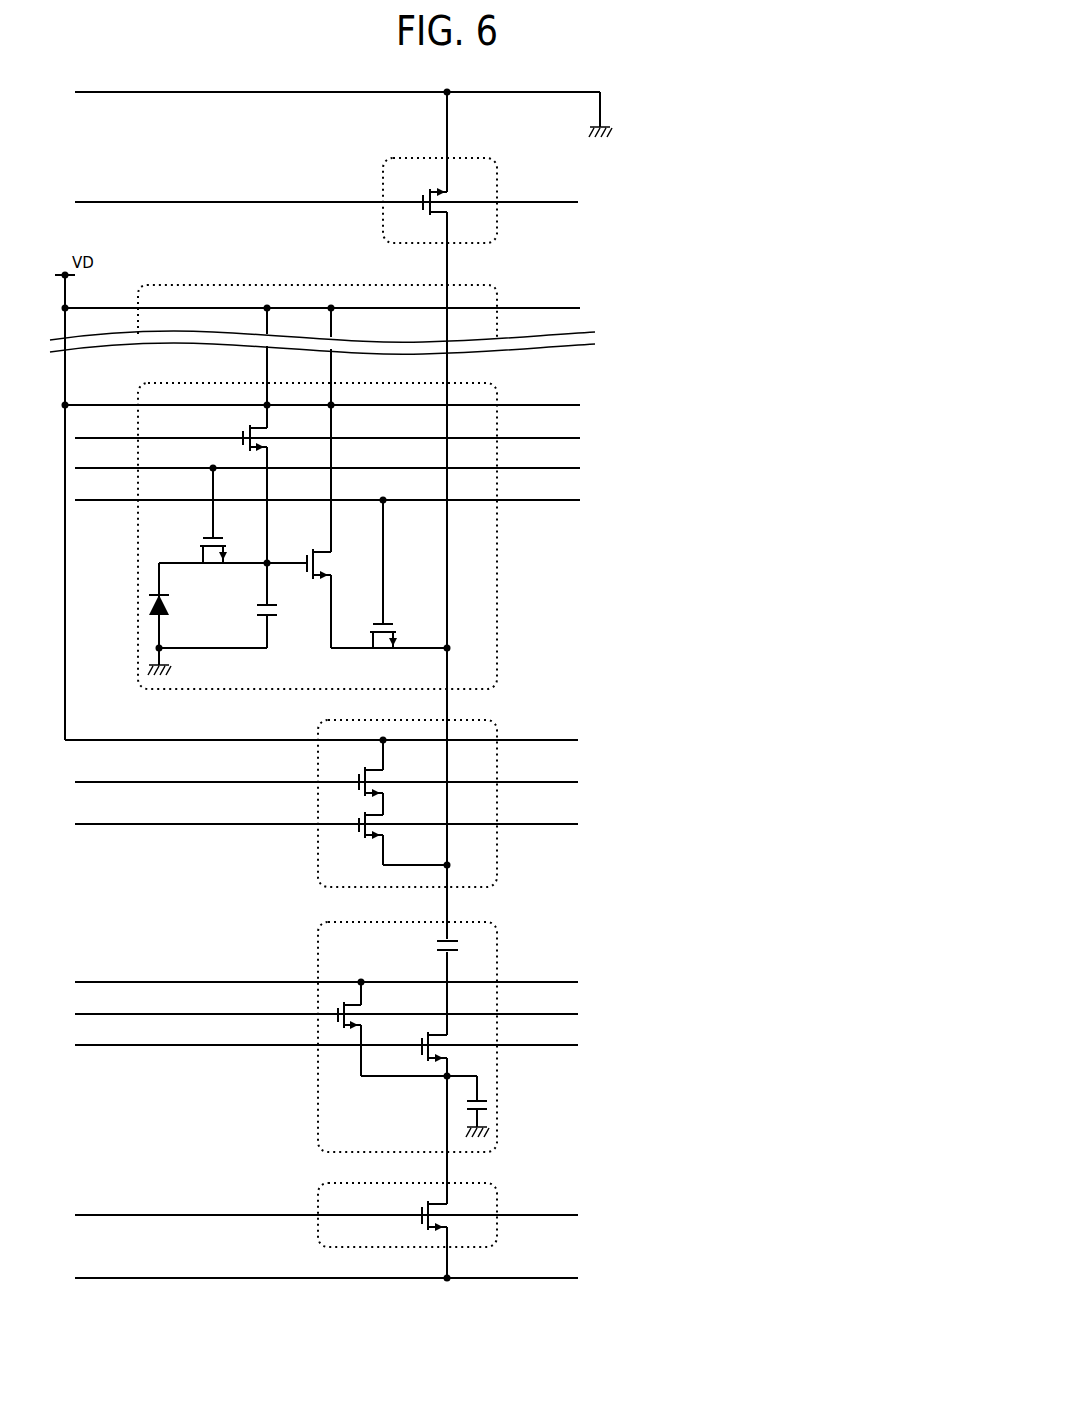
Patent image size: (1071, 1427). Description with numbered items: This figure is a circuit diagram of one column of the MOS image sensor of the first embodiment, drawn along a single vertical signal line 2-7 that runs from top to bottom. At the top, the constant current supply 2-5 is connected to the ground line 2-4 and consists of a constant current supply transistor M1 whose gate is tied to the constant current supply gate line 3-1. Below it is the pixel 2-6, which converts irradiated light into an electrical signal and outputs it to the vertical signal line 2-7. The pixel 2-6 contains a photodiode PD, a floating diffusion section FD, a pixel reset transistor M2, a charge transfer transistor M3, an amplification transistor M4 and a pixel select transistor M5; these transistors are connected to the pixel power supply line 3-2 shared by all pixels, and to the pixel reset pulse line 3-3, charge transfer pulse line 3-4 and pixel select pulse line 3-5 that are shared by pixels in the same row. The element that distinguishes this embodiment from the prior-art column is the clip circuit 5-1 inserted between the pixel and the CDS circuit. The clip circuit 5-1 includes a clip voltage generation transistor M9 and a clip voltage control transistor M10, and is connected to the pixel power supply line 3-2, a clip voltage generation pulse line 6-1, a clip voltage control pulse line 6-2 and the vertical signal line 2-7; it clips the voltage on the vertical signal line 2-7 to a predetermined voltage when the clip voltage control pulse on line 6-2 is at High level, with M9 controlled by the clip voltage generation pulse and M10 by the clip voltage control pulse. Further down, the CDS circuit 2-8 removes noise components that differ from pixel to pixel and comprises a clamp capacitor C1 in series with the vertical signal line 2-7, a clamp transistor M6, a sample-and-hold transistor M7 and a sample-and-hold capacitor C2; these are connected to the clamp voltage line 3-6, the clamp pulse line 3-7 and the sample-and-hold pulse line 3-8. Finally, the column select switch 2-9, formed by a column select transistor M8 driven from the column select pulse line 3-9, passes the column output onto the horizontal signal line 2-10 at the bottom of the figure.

The ground line 2-4 is at (530, 92).
The constant current supply gate line 3-1 is at (540, 202).
The constant current supply 2-5 is at (609, 200).
The pixel power supply line 3-2 is at (530, 405).
The pixel reset pulse line 3-3 is at (530, 438).
The charge transfer pulse line 3-4 is at (530, 468).
The pixel select pulse line 3-5 is at (530, 500).
The pixel 2-6 is at (473, 532).
The clip voltage generation pulse line 6-1 is at (550, 782).
The clip voltage control pulse line 6-2 is at (550, 824).
The clip circuit 5-1 is at (483, 803).
The vertical signal line 2-7 is at (447, 905).
The clamp voltage line 3-6 is at (550, 982).
The clamp pulse line 3-7 is at (550, 1014).
The sample-and-hold pulse line 3-8 is at (550, 1045).
The CDS circuit 2-8 is at (460, 1037).
The column select pulse line 3-9 is at (550, 1215).
The column select switch 2-9 is at (441, 1205).
The horizontal signal line 2-10 is at (550, 1278).
The constant current supply transistor M1 is at (430, 212).
The pixel reset transistor M2 is at (268, 484).
The charge transfer transistor M3 is at (213, 526).
The amplification transistor M4 is at (313, 526).
The pixel select transistor M5 is at (391, 586).
The clamp transistor M6 is at (407, 1029).
The sample-and-hold transistor M7 is at (422, 1056).
The column select transistor M8 is at (420, 1212).
The clip voltage generation transistor M9 is at (359, 777).
The clip voltage control transistor M10 is at (393, 840).
The photodiode PD is at (170, 619).
The floating diffusion section FD is at (229, 605).
The clamp capacitor C1 is at (433, 943).
The sample-and-hold capacitor C2 is at (489, 1102).